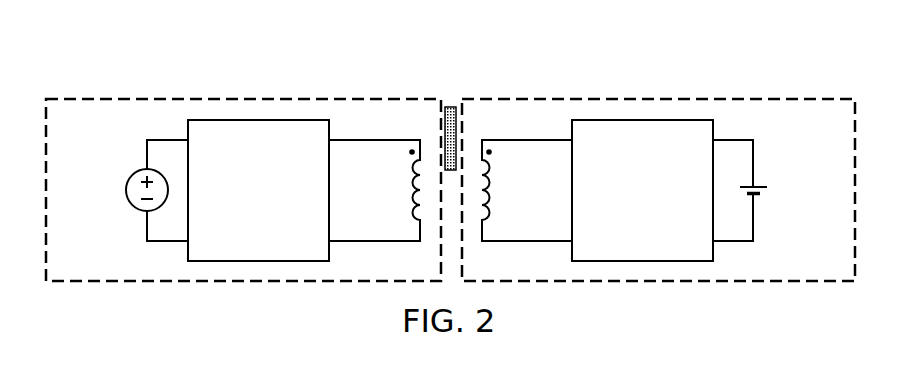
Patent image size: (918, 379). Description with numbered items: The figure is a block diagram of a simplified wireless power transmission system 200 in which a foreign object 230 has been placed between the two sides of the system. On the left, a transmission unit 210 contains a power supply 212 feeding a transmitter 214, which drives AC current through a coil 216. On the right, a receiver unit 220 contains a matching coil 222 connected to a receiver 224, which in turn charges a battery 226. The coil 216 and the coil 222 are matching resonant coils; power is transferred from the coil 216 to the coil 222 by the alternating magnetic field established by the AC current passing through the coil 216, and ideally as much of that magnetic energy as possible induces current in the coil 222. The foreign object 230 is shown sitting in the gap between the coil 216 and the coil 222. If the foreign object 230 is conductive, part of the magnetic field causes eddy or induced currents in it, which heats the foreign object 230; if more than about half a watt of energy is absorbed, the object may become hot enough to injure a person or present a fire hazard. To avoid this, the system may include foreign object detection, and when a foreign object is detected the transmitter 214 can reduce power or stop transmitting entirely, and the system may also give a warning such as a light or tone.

The wireless power transmission system 200 is at (323, 53).
The transmission unit 210 is at (217, 96).
The power supply 212 is at (126, 190).
The transmitter 214 is at (276, 232).
The coil 216 is at (404, 186).
The receiver unit 220 is at (686, 96).
The coil 222 is at (498, 186).
The receiver 224 is at (660, 232).
The battery 226 is at (772, 191).
The foreign object 230 is at (451, 105).